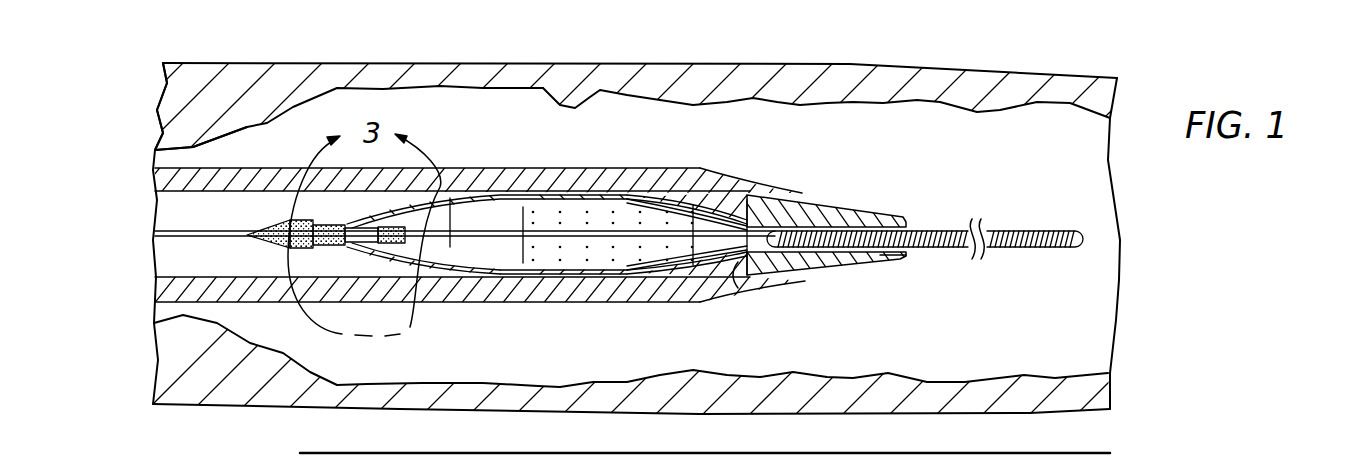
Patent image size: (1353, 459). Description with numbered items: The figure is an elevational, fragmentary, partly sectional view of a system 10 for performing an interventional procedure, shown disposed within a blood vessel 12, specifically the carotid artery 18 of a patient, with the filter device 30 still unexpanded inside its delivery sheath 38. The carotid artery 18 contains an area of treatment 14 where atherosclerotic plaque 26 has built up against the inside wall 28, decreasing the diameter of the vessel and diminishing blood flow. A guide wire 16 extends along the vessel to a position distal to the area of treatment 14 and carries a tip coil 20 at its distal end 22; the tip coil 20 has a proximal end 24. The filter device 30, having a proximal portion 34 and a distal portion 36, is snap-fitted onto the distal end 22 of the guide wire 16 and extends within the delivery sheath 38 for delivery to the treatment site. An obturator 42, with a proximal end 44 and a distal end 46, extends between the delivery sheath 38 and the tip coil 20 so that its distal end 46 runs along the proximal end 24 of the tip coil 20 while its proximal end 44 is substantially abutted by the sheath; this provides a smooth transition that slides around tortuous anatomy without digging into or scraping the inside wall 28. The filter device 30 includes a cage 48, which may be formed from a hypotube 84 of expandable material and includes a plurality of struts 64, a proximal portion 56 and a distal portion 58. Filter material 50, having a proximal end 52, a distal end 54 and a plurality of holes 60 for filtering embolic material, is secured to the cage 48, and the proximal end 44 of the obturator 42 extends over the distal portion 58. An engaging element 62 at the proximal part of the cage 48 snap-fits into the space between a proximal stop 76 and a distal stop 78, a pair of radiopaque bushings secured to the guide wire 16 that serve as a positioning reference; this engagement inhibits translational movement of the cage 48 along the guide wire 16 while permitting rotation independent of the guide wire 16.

The system 10 is at (410, 305).
The blood vessel 12 is at (447, 68).
The area of treatment 14 is at (322, 78).
The guide wire 16 is at (218, 231).
The carotid artery 18 is at (752, 68).
The tip coil 20 is at (922, 233).
The distal end 22 is at (1025, 247).
The proximal end 24 is at (842, 262).
The atherosclerotic plaque 26 is at (260, 103).
The inside wall 28 is at (556, 102).
The filter device 30 is at (634, 207).
The proximal portion 34 is at (462, 200).
The distal portion 36 is at (684, 220).
The delivery sheath 38 is at (740, 186).
The obturator 42 is at (825, 207).
The proximal end 44 is at (812, 272).
The distal end 46 is at (890, 259).
The cage 48 is at (468, 277).
The filter material 50 is at (684, 273).
The proximal end 52 is at (512, 277).
The distal end 54 is at (702, 278).
The proximal portion 56 is at (580, 272).
The distal portion 58 is at (738, 278).
The holes 60 is at (621, 268).
The engaging element 62 is at (363, 246).
The struts 64 is at (500, 200).
The proximal stop 76 is at (305, 215).
The distal stop 78 is at (384, 222).
The hypotube 84 is at (547, 205).